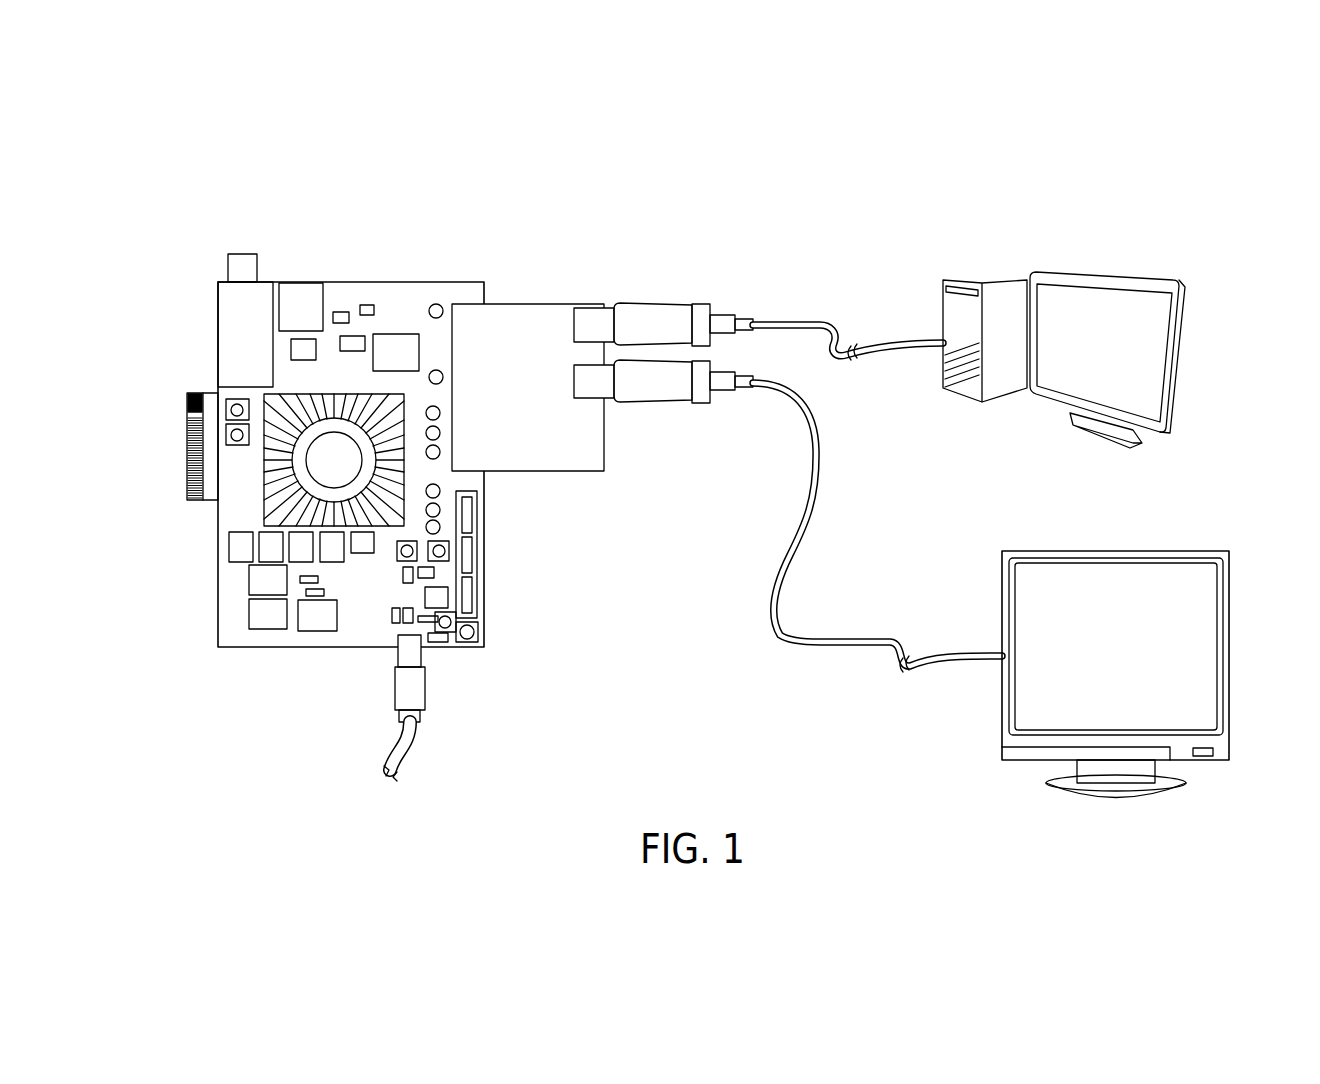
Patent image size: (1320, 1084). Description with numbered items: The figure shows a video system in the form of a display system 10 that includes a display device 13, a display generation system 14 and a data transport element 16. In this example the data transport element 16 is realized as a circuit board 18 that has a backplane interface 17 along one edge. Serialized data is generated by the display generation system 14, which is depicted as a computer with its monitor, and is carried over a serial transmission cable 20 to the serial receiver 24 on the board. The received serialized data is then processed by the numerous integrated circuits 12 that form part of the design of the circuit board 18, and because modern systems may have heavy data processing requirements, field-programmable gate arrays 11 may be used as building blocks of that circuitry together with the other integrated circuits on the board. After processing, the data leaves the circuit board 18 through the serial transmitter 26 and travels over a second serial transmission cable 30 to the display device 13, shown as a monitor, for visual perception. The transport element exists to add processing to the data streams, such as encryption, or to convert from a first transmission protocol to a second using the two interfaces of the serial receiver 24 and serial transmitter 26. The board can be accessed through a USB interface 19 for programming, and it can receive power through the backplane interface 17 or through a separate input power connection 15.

The display system 10 is at (185, 185).
The field-programmable gate arrays 11 is at (267, 493).
The integrated circuits 12 is at (355, 323).
The display device 13 is at (1226, 623).
The display generation system 14 is at (1173, 268).
The input power connection 15 is at (413, 650).
The data transport element 16 is at (504, 568).
The backplane interface 17 is at (180, 393).
The circuit board 18 is at (223, 552).
The USB interface 19 is at (224, 326).
The serial transmission cable 20 is at (822, 322).
The serial receiver 24 is at (597, 300).
The serial transmitter 26 is at (593, 403).
The serial transmission cable 30 is at (820, 490).